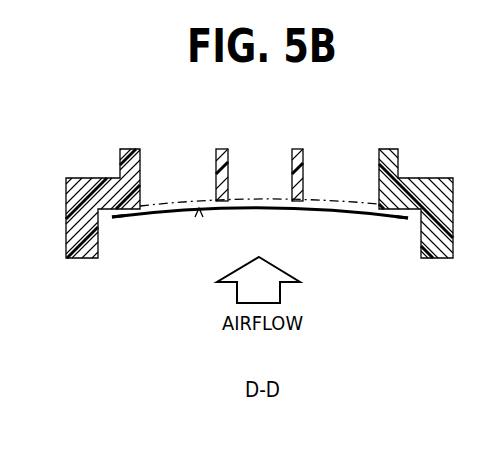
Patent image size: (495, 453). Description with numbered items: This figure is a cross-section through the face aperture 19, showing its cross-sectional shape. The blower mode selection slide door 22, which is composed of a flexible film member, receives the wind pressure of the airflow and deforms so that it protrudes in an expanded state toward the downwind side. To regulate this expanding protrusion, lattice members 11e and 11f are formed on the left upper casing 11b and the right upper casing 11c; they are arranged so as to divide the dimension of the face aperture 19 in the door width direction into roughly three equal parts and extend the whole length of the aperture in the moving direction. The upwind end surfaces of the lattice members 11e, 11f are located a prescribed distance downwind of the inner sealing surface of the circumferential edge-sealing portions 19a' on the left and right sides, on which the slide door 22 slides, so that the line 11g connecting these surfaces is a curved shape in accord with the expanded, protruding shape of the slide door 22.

The left upper casing 11b is at (93, 177).
The right upper casing 11c is at (413, 178).
The lattice member 11e is at (215, 163).
The lattice member 11f is at (304, 163).
The line 11g is at (167, 203).
The face aperture 19 is at (343, 182).
The circumferential edge-sealing portions 19a' is at (261, 269).
The blower mode selection slide door 22 is at (199, 209).